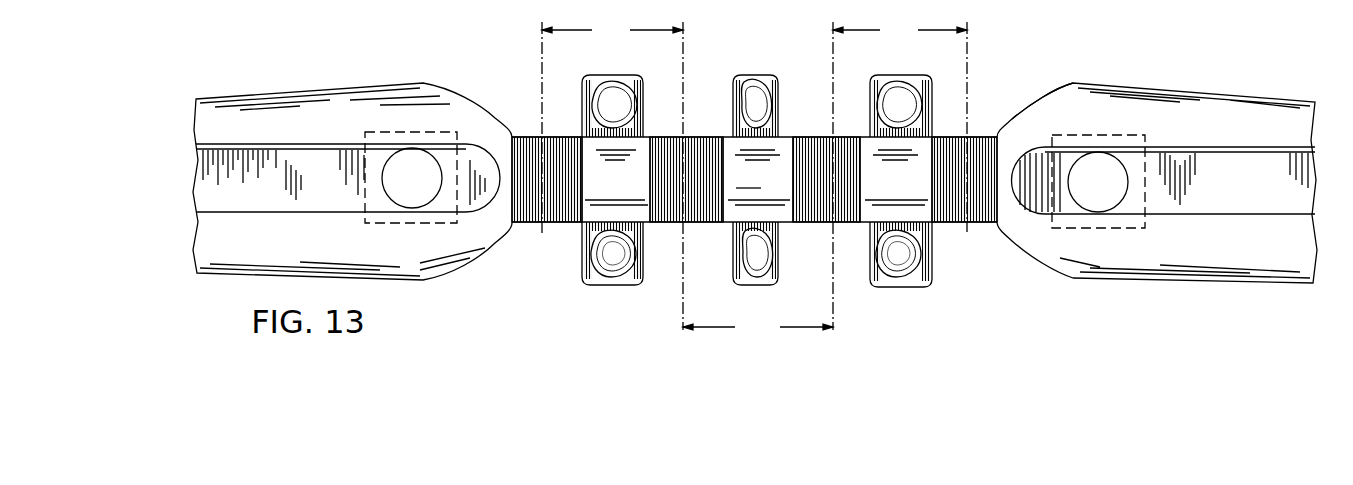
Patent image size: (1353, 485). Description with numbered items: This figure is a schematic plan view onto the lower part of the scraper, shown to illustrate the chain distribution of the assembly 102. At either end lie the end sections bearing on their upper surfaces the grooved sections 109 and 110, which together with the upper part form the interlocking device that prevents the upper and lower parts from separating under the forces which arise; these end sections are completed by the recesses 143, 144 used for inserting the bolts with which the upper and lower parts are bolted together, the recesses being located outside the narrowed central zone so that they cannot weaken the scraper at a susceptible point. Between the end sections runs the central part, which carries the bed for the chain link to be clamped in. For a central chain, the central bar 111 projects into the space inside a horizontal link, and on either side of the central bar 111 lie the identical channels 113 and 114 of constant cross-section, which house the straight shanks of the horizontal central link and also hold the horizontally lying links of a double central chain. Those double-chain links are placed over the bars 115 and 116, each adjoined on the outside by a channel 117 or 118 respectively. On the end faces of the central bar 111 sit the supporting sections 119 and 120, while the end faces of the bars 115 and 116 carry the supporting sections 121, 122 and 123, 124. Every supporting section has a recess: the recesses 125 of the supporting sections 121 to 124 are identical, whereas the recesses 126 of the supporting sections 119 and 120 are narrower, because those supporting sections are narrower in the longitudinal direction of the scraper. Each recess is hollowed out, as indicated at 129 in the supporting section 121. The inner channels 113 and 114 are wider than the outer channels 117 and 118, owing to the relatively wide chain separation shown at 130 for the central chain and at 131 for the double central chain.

The coupling assembly 102 is at (1020, 99).
The grooved section 109 is at (250, 147).
The grooved section 110 is at (1220, 170).
The central bar 111 is at (758, 179).
The channel 113 is at (803, 160).
The channel 114 is at (700, 160).
The bar 115 is at (603, 188).
The bar 116 is at (918, 190).
The channel 117 is at (527, 162).
The channel 118 is at (978, 153).
The supporting section 119 is at (770, 273).
The supporting section 120 is at (772, 85).
The supporting section 121 is at (878, 270).
The supporting section 122 is at (877, 92).
The supporting section 123 is at (635, 262).
The supporting section 124 is at (633, 86).
The recess 125 is at (592, 92).
The recess 126 is at (745, 87).
The hollowed-out recess 129 is at (610, 250).
The chain separation 130 is at (758, 327).
The chain separation 131 is at (754, 173).
The recess 143 is at (398, 163).
The recess 144 is at (1097, 163).